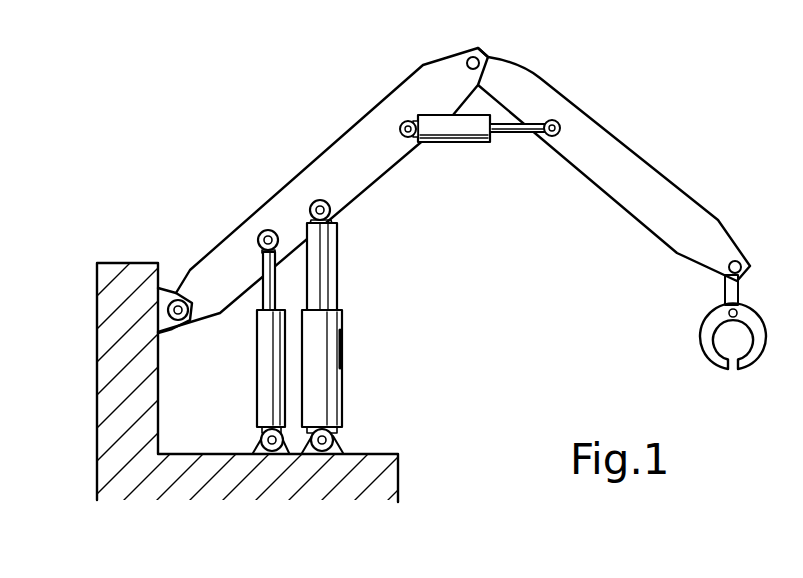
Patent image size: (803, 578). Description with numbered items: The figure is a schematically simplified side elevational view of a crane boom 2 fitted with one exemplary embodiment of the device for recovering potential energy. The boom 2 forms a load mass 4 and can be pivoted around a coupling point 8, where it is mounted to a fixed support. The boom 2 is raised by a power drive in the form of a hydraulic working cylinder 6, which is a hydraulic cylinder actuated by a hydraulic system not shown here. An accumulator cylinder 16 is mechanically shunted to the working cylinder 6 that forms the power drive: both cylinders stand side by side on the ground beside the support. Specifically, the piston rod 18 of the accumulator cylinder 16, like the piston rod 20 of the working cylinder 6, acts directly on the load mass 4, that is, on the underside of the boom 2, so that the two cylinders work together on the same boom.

The crane boom 2 is at (330, 160).
The load mass 4 is at (608, 164).
The hydraulic working cylinder 6 is at (270, 343).
The coupling point 8 is at (178, 300).
The accumulator cylinder 16 is at (342, 368).
The piston rod of the accumulator cylinder 18 is at (320, 273).
The piston rod of the working cylinder 20 is at (266, 282).